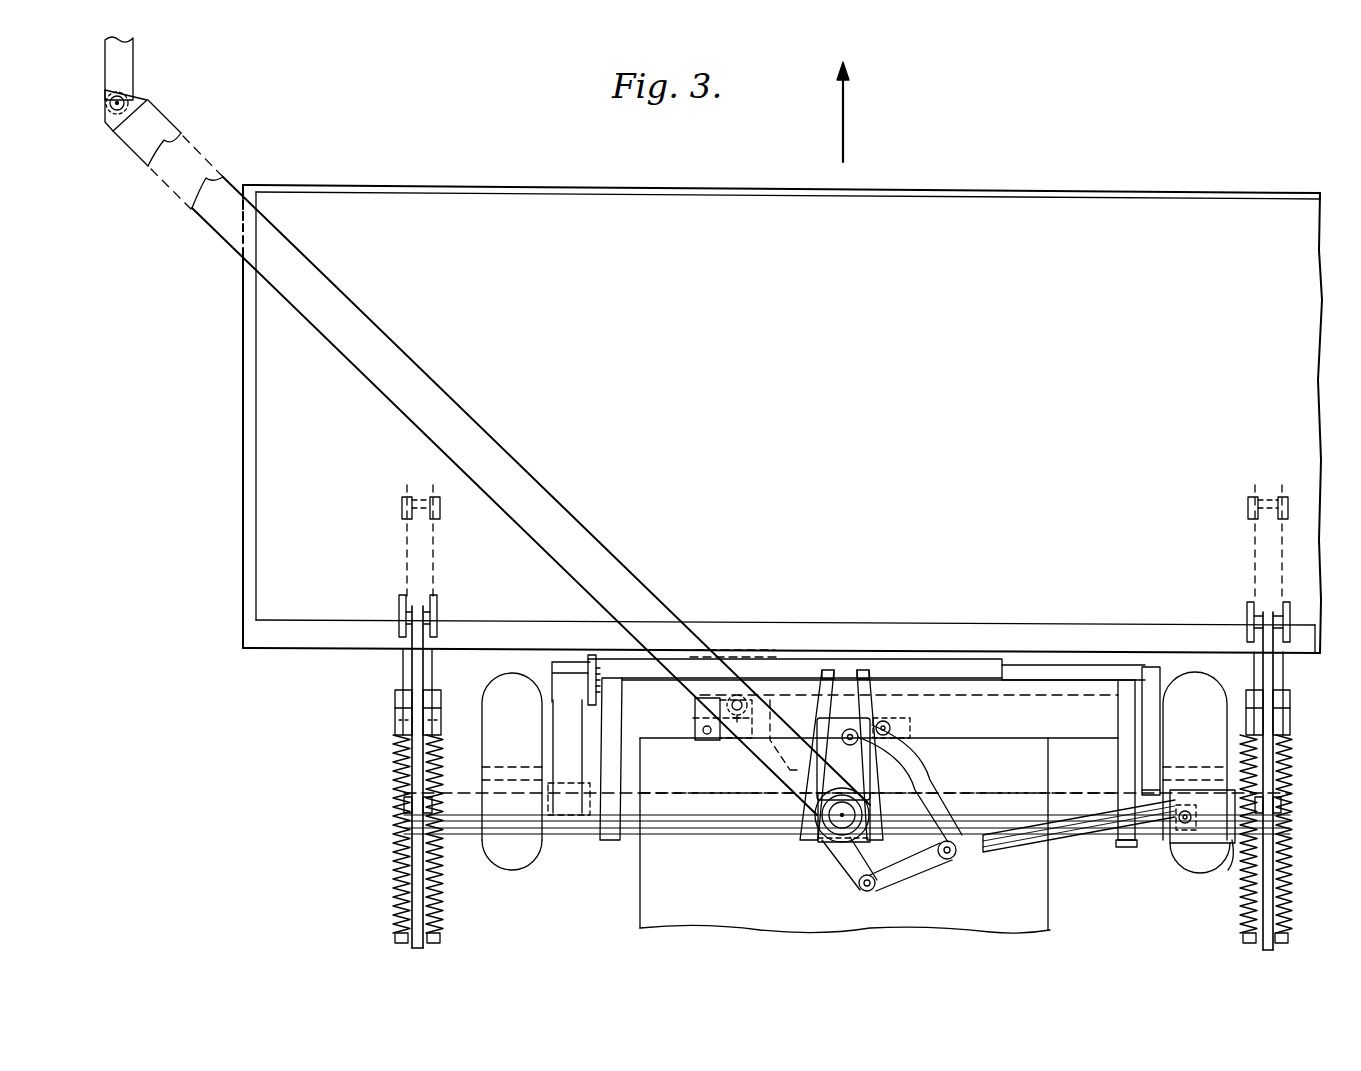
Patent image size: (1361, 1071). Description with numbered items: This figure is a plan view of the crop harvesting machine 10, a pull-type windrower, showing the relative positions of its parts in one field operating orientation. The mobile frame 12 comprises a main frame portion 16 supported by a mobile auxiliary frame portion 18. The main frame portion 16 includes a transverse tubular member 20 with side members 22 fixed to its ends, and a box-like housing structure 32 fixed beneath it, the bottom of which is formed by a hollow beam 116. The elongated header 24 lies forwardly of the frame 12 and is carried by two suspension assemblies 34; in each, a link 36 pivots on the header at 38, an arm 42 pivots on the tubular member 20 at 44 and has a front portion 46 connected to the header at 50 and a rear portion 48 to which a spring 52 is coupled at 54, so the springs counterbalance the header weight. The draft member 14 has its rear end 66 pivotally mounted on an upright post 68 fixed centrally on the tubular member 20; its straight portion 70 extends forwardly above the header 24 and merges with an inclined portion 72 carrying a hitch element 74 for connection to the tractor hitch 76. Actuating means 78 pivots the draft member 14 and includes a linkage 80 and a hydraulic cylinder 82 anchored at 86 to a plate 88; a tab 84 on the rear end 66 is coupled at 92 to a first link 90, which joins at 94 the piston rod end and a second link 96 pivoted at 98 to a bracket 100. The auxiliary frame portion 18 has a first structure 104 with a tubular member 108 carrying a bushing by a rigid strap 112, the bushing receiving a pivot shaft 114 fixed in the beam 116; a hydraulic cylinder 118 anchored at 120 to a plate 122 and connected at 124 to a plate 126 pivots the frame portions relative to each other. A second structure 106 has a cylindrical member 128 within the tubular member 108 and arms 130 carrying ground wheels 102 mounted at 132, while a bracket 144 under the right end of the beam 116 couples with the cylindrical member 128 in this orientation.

The crop harvesting machine 10 is at (1043, 166).
The mobile frame 12 is at (1082, 850).
The draft member 14 is at (449, 395).
The main frame portion 16 is at (563, 840).
The mobile auxiliary frame portion 18 is at (546, 672).
The tubular member 20 is at (474, 836).
The side members 22 is at (396, 719).
The header 24 is at (240, 520).
The box-like housing structure 32 is at (1062, 735).
The suspension assemblies 34 is at (400, 663).
The link 36 is at (405, 550).
The pivotal connection 38 is at (400, 510).
The arm 42 is at (418, 870).
The pivot location 44 is at (404, 806).
The front portion 46 is at (426, 676).
The rear portion 48 is at (426, 915).
The pivotal connection 50 is at (437, 615).
The spring 52 is at (392, 882).
The coupling location 54 is at (396, 938).
The rear end 66 is at (830, 852).
The upright post 68 is at (816, 805).
The straight portion 70 is at (546, 492).
The inclined portion 72 is at (162, 119).
The hitch element 74 is at (109, 125).
The tractor hitch 76 is at (133, 50).
The actuating means 78 is at (950, 777).
The linkage 80 is at (940, 875).
The hydraulic cylinder 82 is at (1082, 833).
The tab 84 is at (838, 870).
The cylinder end anchor 86 is at (1183, 825).
The plate 88 is at (1230, 865).
The first link 90 is at (905, 878).
The pivot coupling 92 is at (870, 890).
The pivot coupling 94 is at (958, 858).
The second link 96 is at (905, 765).
The pivot point 98 is at (850, 746).
The bracket 100 is at (792, 735).
The ground wheels 102 is at (516, 872).
The first structure 104 is at (886, 667).
The second structure 106 is at (1056, 668).
The tubular member 108 is at (975, 675).
The rigid strap 112 is at (738, 657).
The pivot shaft 114 is at (736, 725).
The hollow beam 116 is at (1037, 742).
The hydraulic cylinder 118 is at (787, 720).
The cylinder end anchor 120 is at (887, 722).
The plate 122 is at (912, 722).
The piston rod connection 124 is at (705, 735).
The plate 126 is at (695, 712).
The cylindrical member 128 is at (1150, 666).
The arms 130 is at (562, 718).
The wheel mounting 132 is at (570, 765).
The bracket 144 is at (1122, 705).